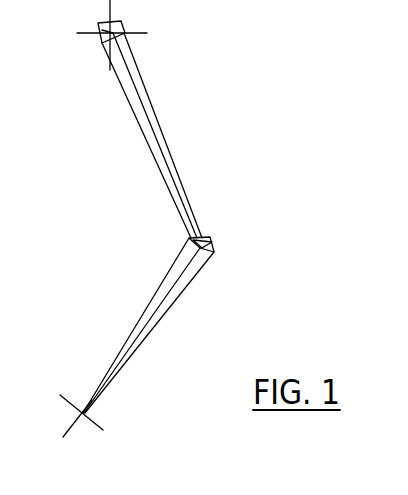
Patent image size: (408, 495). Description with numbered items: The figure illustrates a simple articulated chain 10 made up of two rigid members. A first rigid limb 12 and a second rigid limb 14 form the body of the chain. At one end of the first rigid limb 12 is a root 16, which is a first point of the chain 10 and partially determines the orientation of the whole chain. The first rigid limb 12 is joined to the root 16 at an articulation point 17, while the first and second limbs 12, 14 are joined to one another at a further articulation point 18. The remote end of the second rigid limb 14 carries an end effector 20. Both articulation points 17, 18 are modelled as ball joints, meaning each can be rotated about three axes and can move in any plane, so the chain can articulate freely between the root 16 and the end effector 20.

The articulated chain 10 is at (210, 163).
The first rigid limb 12 is at (154, 110).
The second rigid limb 14 is at (146, 337).
The root 16 is at (123, 27).
The articulation point 17 is at (110, 33).
The articulation point 18 is at (210, 238).
The end effector 20 is at (84, 418).